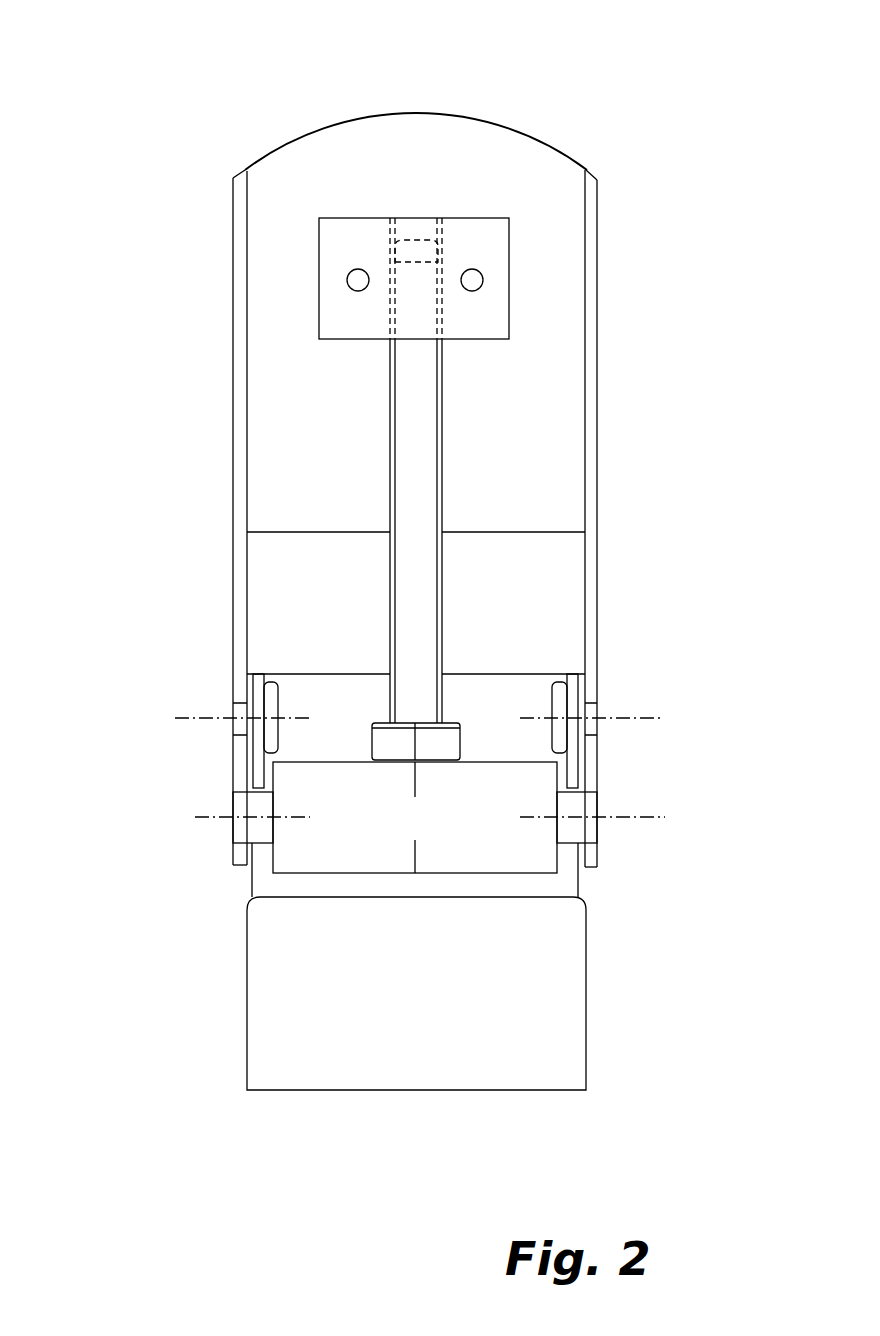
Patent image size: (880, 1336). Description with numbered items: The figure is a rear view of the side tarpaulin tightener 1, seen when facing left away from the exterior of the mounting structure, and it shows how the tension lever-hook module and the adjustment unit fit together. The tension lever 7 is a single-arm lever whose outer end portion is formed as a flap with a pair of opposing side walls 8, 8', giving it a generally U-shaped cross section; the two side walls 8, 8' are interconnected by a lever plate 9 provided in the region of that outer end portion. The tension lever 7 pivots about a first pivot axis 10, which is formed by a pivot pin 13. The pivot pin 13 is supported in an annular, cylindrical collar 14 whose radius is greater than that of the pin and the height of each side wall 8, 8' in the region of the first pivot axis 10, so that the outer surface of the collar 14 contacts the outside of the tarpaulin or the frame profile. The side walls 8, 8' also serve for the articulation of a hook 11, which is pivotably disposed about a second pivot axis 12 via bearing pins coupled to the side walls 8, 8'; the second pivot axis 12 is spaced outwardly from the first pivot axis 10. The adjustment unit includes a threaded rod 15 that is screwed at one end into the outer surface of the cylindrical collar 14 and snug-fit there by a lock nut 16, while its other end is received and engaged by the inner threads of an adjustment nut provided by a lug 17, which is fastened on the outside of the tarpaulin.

The side tarpaulin tightener 1 is at (90, 135).
The tension lever 7 is at (680, 317).
The side wall 8 is at (167, 518).
The side wall 8' is at (663, 518).
The lever plate 9 is at (490, 426).
The first pivot axis 10 is at (655, 808).
The hook 11 is at (384, 1026).
The second pivot axis 12 is at (657, 710).
The pivot pin 13 is at (265, 835).
The cylindrical collar 14 is at (463, 841).
The threaded rod 15 is at (395, 655).
The lock nut 16 is at (458, 723).
The lug 17 is at (460, 220).